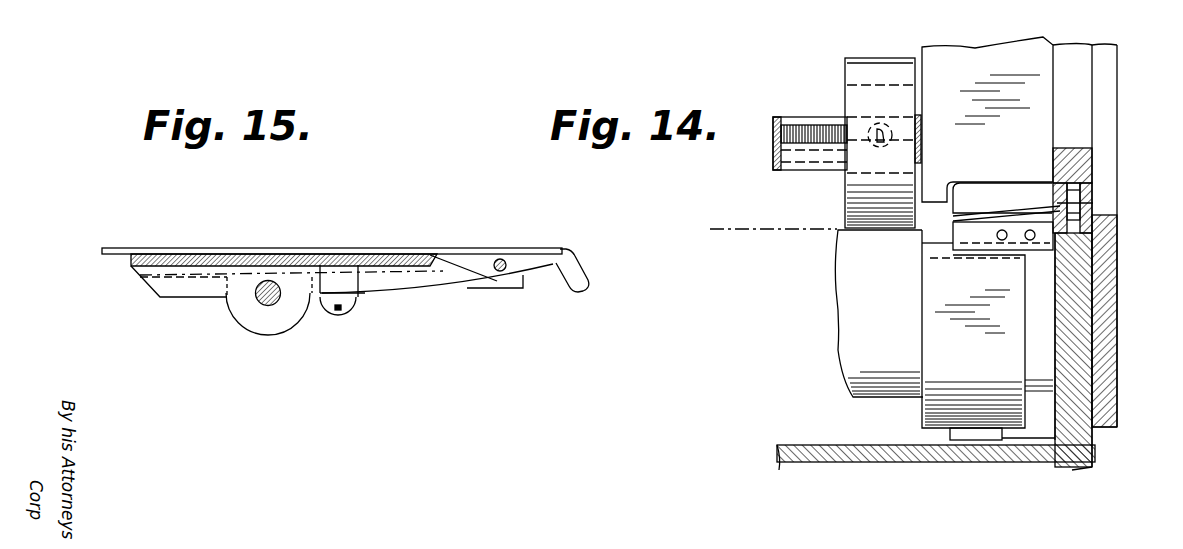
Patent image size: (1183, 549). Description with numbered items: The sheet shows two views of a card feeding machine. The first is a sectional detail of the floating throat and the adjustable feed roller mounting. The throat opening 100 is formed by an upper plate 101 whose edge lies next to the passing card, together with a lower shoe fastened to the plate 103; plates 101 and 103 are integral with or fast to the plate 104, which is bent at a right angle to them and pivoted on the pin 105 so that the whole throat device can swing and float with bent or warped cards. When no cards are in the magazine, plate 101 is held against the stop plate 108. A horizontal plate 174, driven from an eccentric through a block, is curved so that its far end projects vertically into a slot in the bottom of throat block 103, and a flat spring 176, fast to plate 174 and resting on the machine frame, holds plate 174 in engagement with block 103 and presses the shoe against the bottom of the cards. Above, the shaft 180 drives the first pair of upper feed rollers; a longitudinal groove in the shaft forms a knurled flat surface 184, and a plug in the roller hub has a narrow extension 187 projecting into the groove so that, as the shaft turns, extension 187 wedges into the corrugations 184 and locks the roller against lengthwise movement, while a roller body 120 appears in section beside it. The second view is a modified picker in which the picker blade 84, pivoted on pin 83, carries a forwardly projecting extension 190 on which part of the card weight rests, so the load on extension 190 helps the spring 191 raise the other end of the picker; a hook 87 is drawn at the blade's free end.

In FIG. 15, the pin 83 is at (503, 262).
In FIG. 15, the picker blade 84 is at (555, 263).
In FIG. 15, the hook 87 is at (570, 258).
In FIG. 15, the forwardly projecting extension 190 is at (467, 262).
In FIG. 15, the spring 191 is at (494, 283).
In FIG. 14, the throat opening 100 is at (952, 216).
In FIG. 14, the upper plate 101 is at (985, 193).
In FIG. 14, the plate 103 is at (960, 223).
In FIG. 14, the plate 104 is at (1075, 197).
In FIG. 14, the pin 105 is at (1093, 205).
In FIG. 14, the stop plate 108 is at (987, 119).
In FIG. 14, the drum 120 is at (850, 350).
In FIG. 14, the horizontal plate 174 is at (973, 335).
In FIG. 14, the flat spring 176 is at (947, 437).
In FIG. 14, the shaft 180 is at (782, 172).
In FIG. 14, the flat surface 184 is at (806, 125).
In FIG. 14, the narrow extension 187 is at (878, 140).